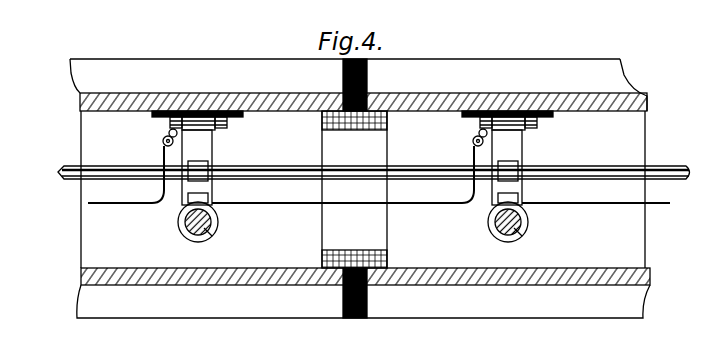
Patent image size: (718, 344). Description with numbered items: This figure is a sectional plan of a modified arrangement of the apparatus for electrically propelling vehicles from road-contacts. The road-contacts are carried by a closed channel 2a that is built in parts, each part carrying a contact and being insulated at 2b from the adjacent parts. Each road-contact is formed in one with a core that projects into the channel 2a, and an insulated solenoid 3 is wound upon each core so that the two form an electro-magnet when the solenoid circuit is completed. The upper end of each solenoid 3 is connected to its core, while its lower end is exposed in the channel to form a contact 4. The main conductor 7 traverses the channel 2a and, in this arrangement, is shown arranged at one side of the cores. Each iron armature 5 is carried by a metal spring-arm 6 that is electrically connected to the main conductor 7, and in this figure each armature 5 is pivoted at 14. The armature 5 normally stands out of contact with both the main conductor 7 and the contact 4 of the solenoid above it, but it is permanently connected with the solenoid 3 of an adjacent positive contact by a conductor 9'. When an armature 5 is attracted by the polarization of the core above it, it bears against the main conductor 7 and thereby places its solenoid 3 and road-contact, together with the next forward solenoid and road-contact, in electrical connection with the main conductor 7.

The closed channel 2a is at (360, 188).
The insulation between channel parts 2b is at (367, 188).
The armature pivot 14 is at (171, 122).
The metal spring-arm 6 is at (211, 140).
The solenoid contact 4 is at (214, 192).
The main conductor 7 is at (374, 163).
The conductor wire 9' is at (379, 180).
The insulated solenoid 3 is at (178, 224).
The iron armature 5 is at (366, 238).